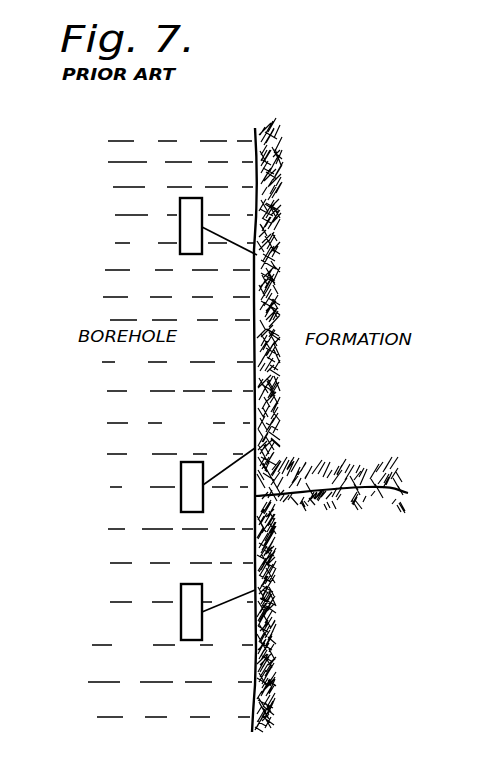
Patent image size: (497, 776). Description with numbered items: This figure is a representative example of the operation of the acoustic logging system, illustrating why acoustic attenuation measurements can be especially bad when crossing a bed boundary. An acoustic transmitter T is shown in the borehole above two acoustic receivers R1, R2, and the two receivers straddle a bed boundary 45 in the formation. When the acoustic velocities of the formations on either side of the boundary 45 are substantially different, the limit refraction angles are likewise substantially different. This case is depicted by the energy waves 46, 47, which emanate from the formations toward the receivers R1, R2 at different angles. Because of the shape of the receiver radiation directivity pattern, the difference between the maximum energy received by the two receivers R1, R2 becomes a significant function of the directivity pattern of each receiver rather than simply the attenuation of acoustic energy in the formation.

The acoustic transmitter T is at (186, 232).
The acoustic receiver R1 is at (188, 494).
The acoustic receiver R2 is at (188, 617).
The energy wave 46 is at (221, 473).
The energy wave 47 is at (233, 605).
The bed boundary 45 is at (350, 490).